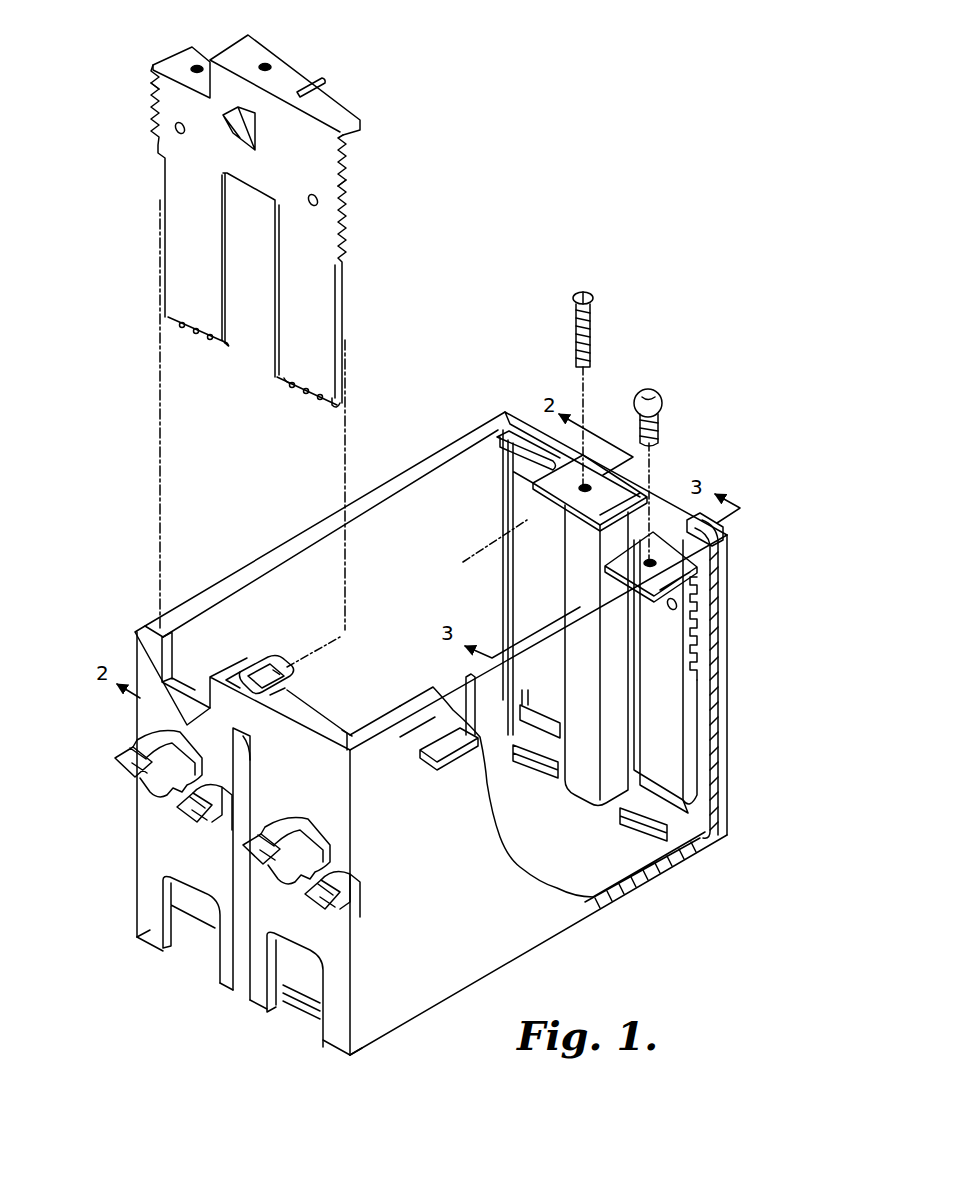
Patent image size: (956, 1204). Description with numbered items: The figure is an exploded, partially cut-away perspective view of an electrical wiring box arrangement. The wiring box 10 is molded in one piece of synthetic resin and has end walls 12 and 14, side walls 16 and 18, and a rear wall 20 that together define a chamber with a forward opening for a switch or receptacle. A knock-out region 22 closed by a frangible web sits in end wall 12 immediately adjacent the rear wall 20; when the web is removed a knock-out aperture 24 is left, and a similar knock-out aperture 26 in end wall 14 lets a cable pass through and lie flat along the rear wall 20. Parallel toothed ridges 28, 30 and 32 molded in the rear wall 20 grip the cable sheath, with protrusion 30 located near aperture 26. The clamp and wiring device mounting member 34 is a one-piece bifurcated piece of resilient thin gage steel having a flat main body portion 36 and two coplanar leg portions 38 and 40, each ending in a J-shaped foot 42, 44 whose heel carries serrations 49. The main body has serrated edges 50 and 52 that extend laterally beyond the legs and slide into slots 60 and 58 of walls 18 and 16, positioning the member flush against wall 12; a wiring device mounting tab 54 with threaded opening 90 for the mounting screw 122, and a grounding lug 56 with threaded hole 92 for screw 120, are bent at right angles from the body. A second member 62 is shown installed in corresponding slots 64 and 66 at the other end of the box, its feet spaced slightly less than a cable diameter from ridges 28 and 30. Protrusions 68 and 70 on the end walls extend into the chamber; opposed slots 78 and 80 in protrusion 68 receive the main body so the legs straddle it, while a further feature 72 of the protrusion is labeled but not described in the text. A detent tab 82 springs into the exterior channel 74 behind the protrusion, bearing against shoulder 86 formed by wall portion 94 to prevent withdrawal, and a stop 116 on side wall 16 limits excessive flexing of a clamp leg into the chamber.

The electrical wiring box 10 is at (557, 946).
The end wall 12 is at (310, 797).
The end wall 14 is at (537, 413).
The side wall 16 is at (393, 584).
The side wall 18 is at (423, 873).
The rear wall 20 is at (550, 836).
The knock-out region 22 is at (200, 920).
The knock-out aperture 24 is at (302, 976).
The knock-out aperture 26 is at (686, 846).
The toothed ridge 28 is at (527, 766).
The toothed ridge 30 is at (632, 823).
The toothed ridge 32 is at (312, 1003).
The clamp and wiring device mounting member 34 is at (150, 259).
The main body portion 36 is at (262, 177).
The leg portion 38 is at (313, 295).
The leg portion 40 is at (205, 255).
The foot 42 is at (332, 410).
The foot 44 is at (655, 773).
The serrations 49 is at (290, 392).
The edge 50 is at (349, 185).
The edge 52 is at (152, 82).
The wiring device mounting tab 54 is at (255, 50).
The grounding lug 56 is at (186, 60).
The slot 58 is at (167, 629).
The slot 60 is at (346, 731).
The clamp and wiring device mounting member 62 is at (540, 583).
The slot 64 is at (501, 410).
The slot 66 is at (700, 537).
The protrusion 68 is at (243, 663).
The protrusion 70 is at (592, 577).
The clip wall 72 is at (277, 666).
The channel 74 is at (230, 868).
The slot 78 is at (233, 668).
The slot 80 is at (285, 693).
The detent tab 82 is at (233, 133).
The shoulder 86 is at (250, 742).
The threaded opening 90 is at (272, 67).
The threaded screw-receiving hole 92 is at (201, 65).
The wall portion 94 is at (258, 726).
The stop 116 is at (465, 681).
The screw 120 is at (656, 393).
The mounting screw 122 is at (592, 292).